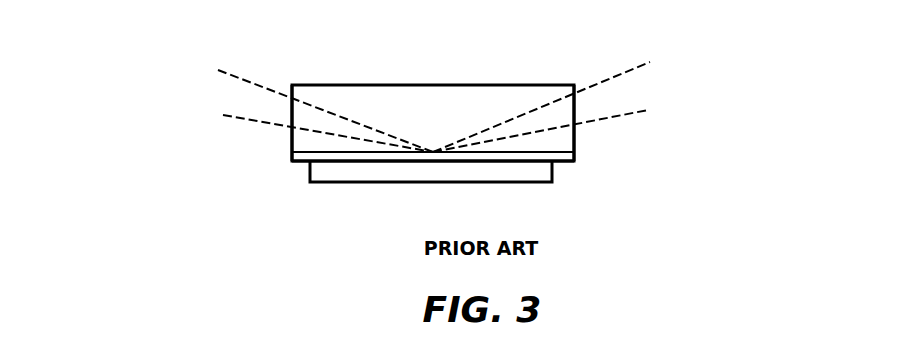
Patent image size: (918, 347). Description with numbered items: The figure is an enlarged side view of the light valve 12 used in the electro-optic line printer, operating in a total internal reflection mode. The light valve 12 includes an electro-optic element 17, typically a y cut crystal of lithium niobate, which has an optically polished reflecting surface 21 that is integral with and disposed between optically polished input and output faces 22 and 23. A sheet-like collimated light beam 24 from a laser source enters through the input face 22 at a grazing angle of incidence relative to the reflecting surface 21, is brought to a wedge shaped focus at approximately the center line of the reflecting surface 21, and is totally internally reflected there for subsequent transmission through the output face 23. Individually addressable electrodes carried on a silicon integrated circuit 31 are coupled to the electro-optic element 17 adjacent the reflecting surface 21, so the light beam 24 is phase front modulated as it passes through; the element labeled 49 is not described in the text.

The light valve 12 is at (440, 60).
The electro-optic element 17 is at (362, 95).
The reflecting surface 21 is at (530, 148).
The input face 22 is at (292, 137).
The output face 23 is at (577, 135).
The light beam 24 is at (235, 102).
The silicon integrated circuit 31 is at (380, 167).
The bottom wall 49 is at (297, 163).